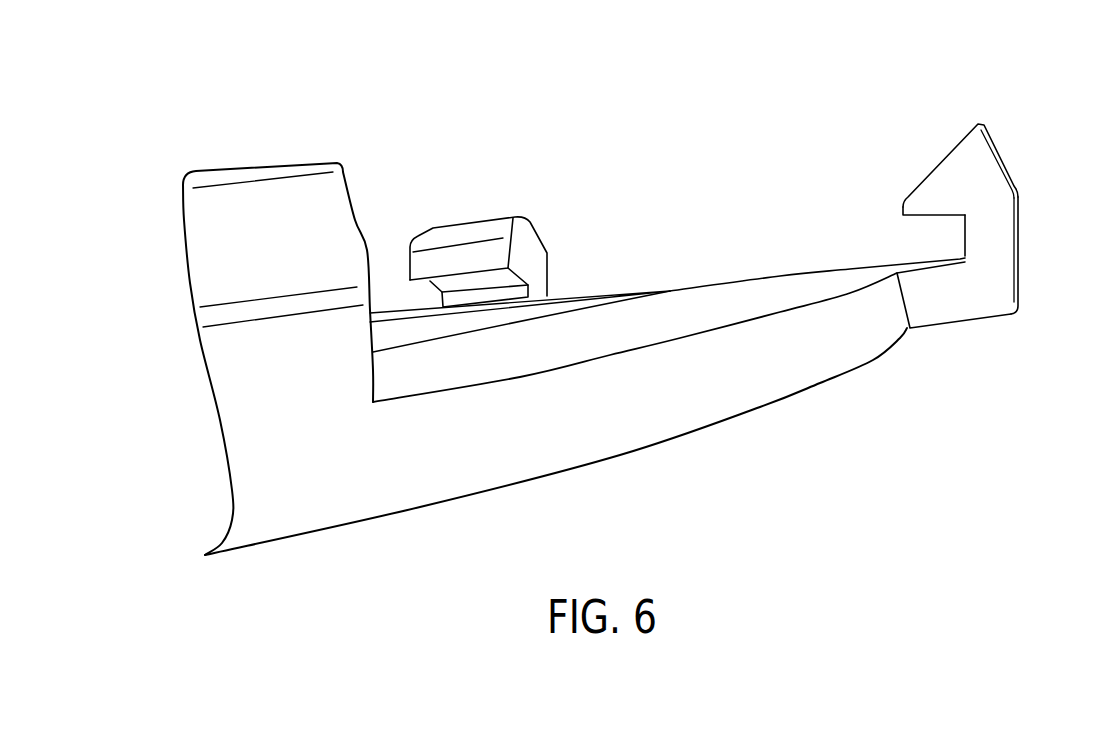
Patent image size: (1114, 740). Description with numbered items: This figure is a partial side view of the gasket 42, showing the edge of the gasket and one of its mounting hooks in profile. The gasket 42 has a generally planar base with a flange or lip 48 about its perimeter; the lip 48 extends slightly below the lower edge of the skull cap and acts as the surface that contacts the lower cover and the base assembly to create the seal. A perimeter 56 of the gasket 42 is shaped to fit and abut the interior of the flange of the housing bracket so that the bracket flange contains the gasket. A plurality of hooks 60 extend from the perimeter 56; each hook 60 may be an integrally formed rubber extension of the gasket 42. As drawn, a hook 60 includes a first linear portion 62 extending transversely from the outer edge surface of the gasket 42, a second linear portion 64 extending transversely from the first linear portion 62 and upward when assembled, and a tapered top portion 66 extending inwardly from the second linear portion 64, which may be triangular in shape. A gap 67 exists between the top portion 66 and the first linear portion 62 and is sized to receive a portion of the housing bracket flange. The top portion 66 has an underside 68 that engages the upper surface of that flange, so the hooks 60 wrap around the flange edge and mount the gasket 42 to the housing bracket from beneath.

The gasket 42 is at (406, 133).
The lip 48 is at (663, 442).
The perimeter 56 is at (758, 388).
The hooks 60 is at (478, 235).
The first linear portion 62 is at (967, 302).
The second linear portion 64 is at (997, 237).
The top portion 66 is at (980, 170).
The gap 67 is at (977, 254).
The underside 68 is at (933, 220).